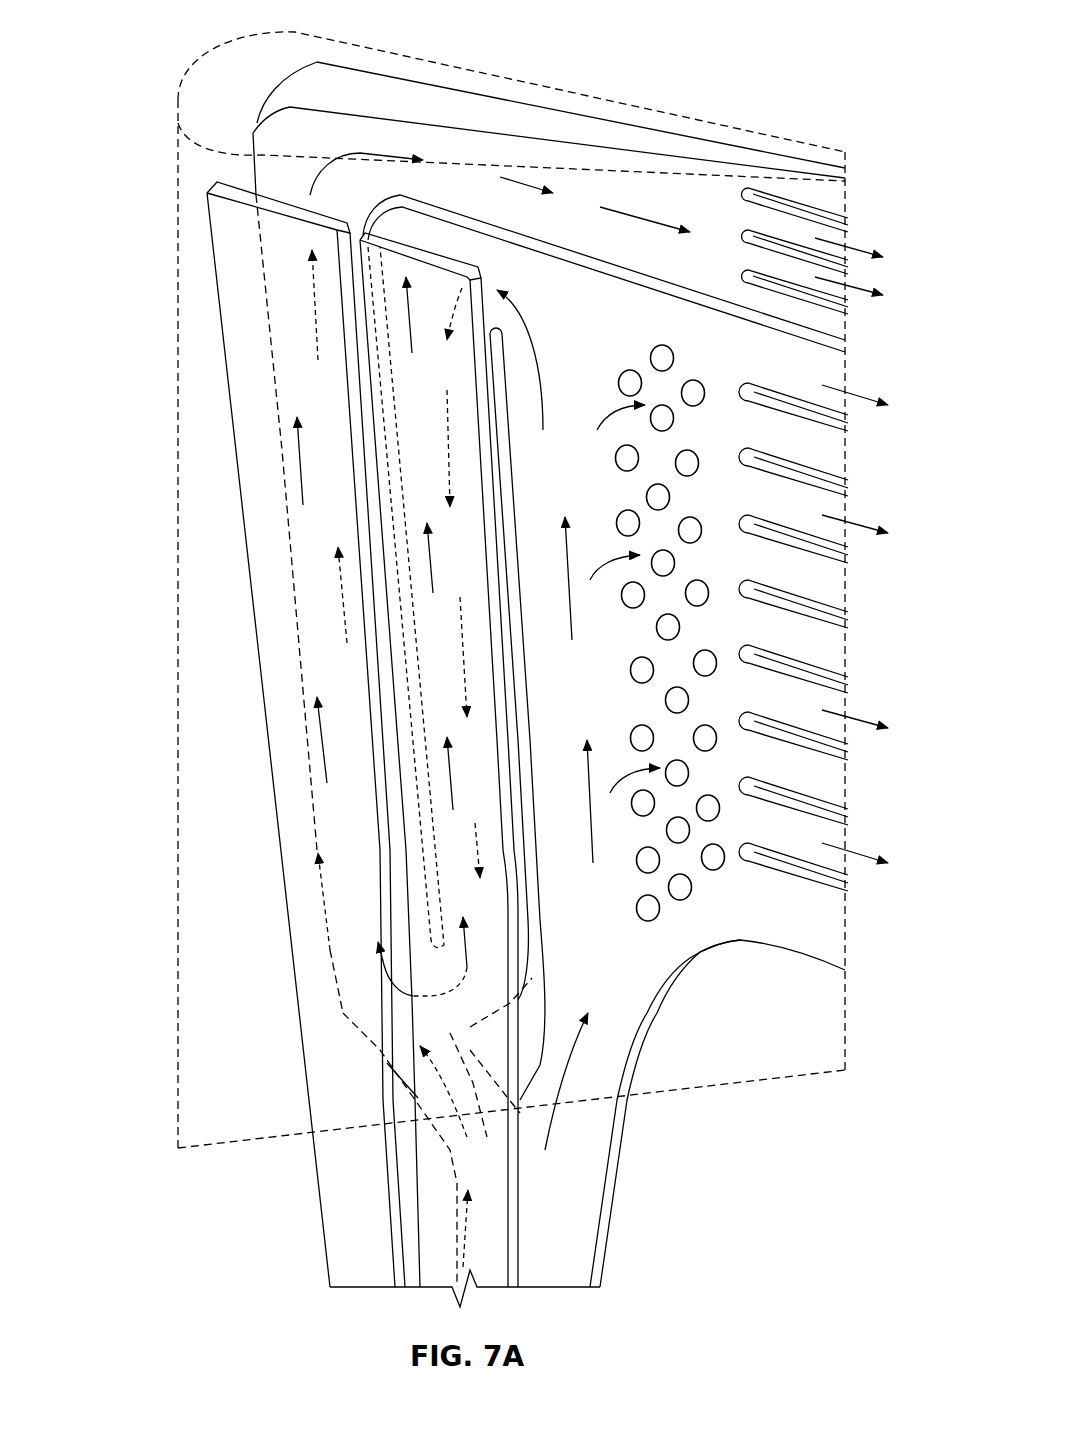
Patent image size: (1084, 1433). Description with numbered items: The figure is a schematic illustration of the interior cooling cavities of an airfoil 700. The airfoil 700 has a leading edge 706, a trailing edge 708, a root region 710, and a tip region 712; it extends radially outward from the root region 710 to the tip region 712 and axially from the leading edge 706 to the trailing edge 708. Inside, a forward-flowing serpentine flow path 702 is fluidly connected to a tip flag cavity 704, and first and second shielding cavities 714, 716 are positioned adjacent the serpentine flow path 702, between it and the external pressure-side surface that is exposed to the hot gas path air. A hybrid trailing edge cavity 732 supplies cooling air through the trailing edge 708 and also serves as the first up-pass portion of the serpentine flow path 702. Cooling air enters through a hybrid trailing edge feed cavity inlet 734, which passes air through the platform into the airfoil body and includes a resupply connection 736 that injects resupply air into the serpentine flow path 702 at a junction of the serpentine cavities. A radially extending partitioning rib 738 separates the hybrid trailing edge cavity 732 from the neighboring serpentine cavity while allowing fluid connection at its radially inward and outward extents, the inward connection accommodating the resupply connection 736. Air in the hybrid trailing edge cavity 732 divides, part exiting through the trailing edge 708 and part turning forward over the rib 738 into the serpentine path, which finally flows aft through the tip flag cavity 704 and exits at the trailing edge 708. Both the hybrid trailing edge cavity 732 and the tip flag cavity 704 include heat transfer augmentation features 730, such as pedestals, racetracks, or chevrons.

The airfoil 700 is at (194, 27).
The forward-flowing serpentine flow path 702 is at (310, 855).
The tip flag cavity 704 is at (701, 213).
The leading edge 706 is at (177, 623).
The trailing edge 708 is at (847, 465).
The root region 710 is at (160, 1130).
The tip region 712 is at (680, 79).
The first shielding cavity 714 is at (233, 237).
The second shielding cavity 716 is at (415, 432).
The heat transfer augmentation features 730 is at (825, 263).
The hybrid trailing edge cavity 732 is at (598, 694).
The hybrid trailing edge feed cavity inlet 734 is at (573, 1168).
The resupply connection 736 is at (343, 1013).
The radially extending partitioning rib 738 is at (510, 505).